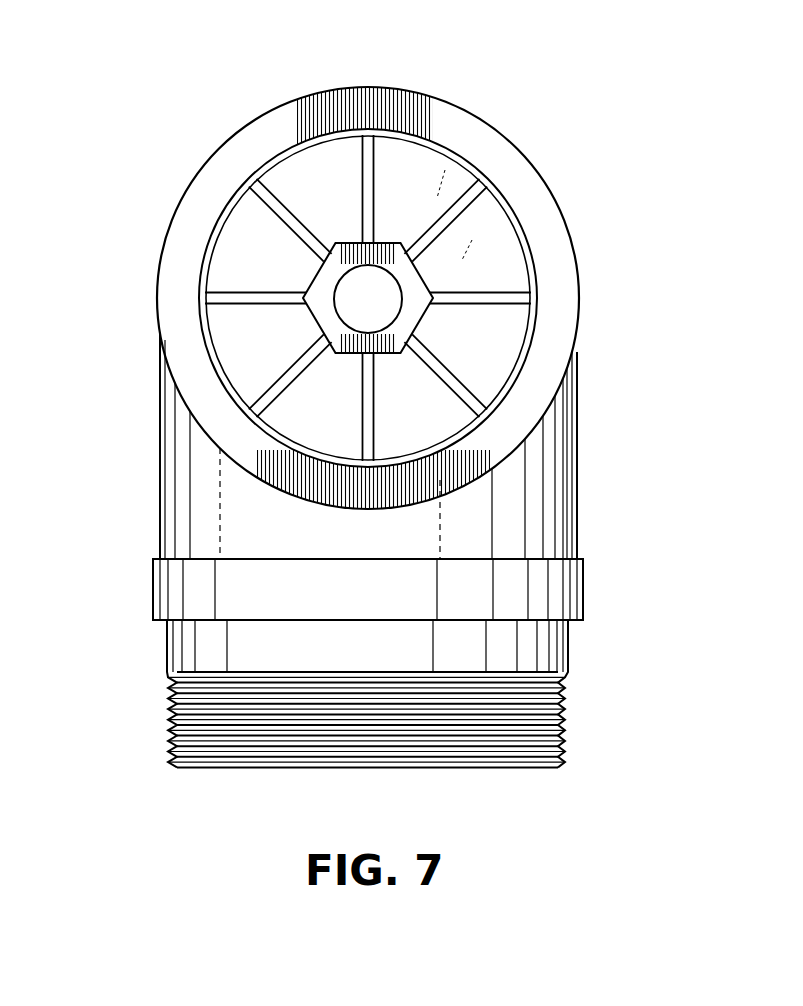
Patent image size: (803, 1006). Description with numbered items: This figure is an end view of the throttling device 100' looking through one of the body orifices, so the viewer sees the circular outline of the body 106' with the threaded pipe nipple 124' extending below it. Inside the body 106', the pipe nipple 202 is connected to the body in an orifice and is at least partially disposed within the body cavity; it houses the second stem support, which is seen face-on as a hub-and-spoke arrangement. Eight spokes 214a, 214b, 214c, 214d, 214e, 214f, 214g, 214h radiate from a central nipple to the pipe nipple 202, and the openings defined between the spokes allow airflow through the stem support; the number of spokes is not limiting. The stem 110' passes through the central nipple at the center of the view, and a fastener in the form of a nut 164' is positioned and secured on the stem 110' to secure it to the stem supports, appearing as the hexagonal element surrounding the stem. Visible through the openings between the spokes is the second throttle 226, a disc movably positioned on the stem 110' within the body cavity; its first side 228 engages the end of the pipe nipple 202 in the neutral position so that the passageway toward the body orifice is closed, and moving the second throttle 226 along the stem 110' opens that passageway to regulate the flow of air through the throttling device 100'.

The throttling device 100' is at (431, 281).
The body 106' is at (368, 269).
The stem 110' is at (503, 316).
The pipe nipple 124' is at (419, 677).
The nut 164' is at (240, 330).
The pipe nipple 202 is at (328, 130).
The spoke 214a is at (367, 157).
The spoke 214b is at (372, 440).
The spoke 214c is at (473, 197).
The spoke 214d is at (510, 290).
The spoke 214e is at (472, 398).
The spoke 214f is at (260, 407).
The spoke 214g is at (215, 290).
The spoke 214h is at (263, 195).
The second throttle 226 is at (445, 170).
The first side 228 is at (472, 240).